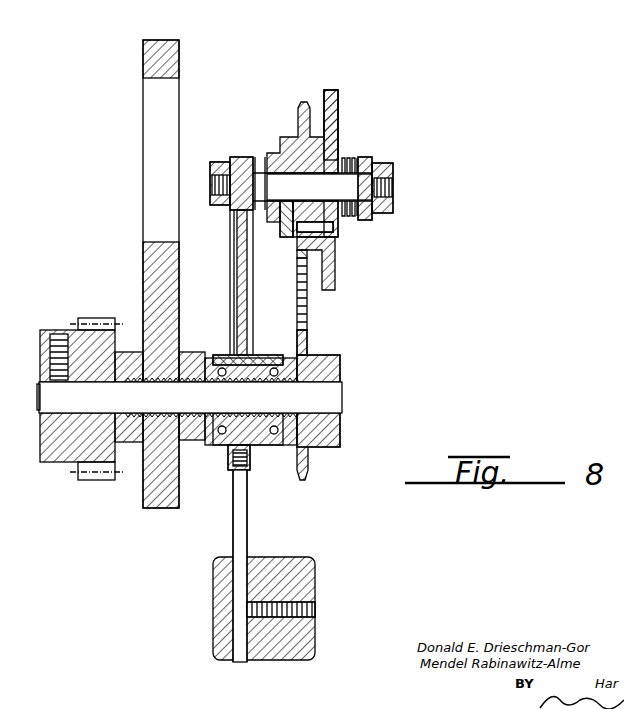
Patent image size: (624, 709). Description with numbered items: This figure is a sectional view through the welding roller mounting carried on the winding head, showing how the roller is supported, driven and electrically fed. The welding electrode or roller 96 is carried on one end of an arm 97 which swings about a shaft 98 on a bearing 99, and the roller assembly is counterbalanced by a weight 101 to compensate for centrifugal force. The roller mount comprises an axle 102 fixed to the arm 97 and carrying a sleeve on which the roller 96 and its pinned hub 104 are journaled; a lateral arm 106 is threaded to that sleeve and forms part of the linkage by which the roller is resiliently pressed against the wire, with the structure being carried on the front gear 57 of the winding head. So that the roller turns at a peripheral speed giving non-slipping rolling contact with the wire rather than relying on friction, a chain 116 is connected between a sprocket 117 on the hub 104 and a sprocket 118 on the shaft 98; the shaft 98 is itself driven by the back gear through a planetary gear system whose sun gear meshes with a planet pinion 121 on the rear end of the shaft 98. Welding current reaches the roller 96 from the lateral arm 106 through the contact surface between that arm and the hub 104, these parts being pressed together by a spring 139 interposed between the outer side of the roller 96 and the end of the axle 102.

The front gear 57 is at (141, 497).
The welding electrode or roller 96 is at (338, 103).
The arm 97 is at (237, 297).
The shaft 98 is at (332, 400).
The bearing 99 is at (272, 450).
The weight 101 is at (305, 585).
The axle 102 is at (393, 187).
The pinned hub 104 is at (287, 147).
The lateral arm 106 is at (283, 220).
The chain 116 is at (311, 308).
The sprocket 117 is at (312, 256).
The sprocket 118 is at (308, 462).
The planet pinion 121 is at (65, 462).
The spring 139 is at (352, 155).